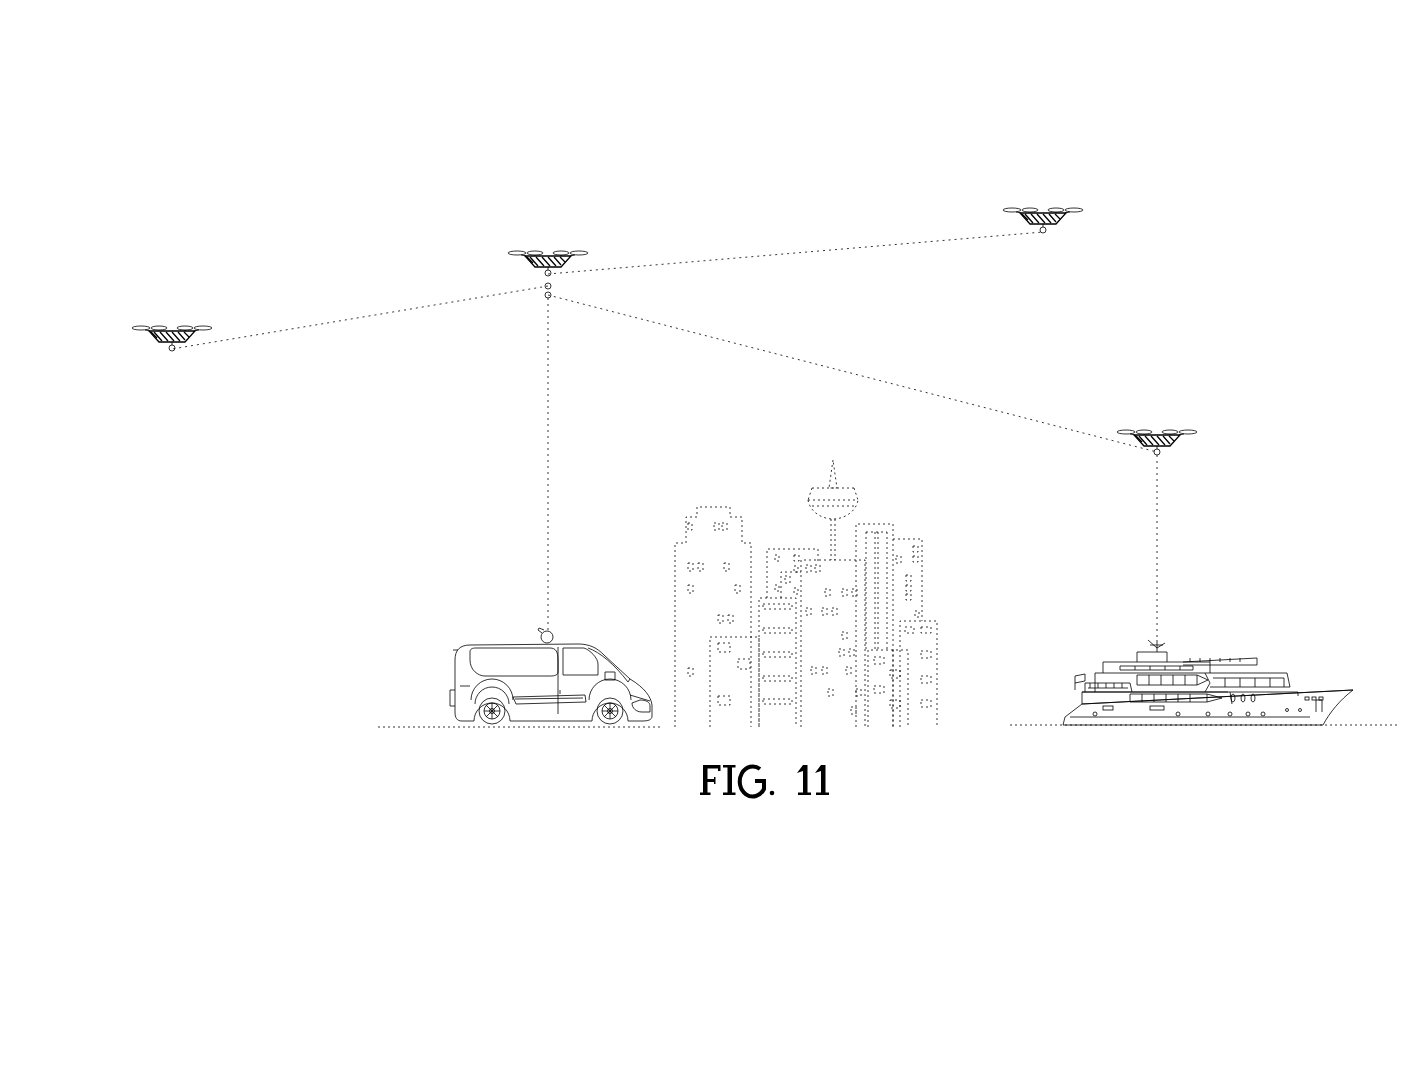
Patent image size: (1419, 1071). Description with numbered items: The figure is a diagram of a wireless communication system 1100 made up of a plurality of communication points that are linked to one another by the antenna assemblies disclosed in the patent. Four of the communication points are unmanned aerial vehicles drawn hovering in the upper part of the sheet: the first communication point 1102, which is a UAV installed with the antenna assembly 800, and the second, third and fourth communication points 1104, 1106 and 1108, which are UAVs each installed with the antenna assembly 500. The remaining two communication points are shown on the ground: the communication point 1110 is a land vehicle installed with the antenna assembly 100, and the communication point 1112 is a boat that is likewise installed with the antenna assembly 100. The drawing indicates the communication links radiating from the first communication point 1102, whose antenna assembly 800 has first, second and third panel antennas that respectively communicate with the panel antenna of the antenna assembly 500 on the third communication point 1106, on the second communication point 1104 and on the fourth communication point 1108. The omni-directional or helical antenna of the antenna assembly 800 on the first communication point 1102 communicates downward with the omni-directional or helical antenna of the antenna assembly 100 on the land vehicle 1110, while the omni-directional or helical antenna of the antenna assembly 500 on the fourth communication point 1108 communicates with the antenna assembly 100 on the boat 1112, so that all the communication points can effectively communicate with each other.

The wireless communication system 1100 is at (218, 124).
The first communication point 1102 is at (548, 243).
The second communication point 1104 is at (175, 318).
The third communication point 1106 is at (1043, 200).
The fourth communication point 1108 is at (1157, 421).
The antenna assembly 500 is at (688, 314).
The antenna assembly 800 is at (539, 299).
The antenna assembly 100 is at (889, 641).
The communication point 1110 is at (578, 628).
The communication point 1112 is at (1192, 645).